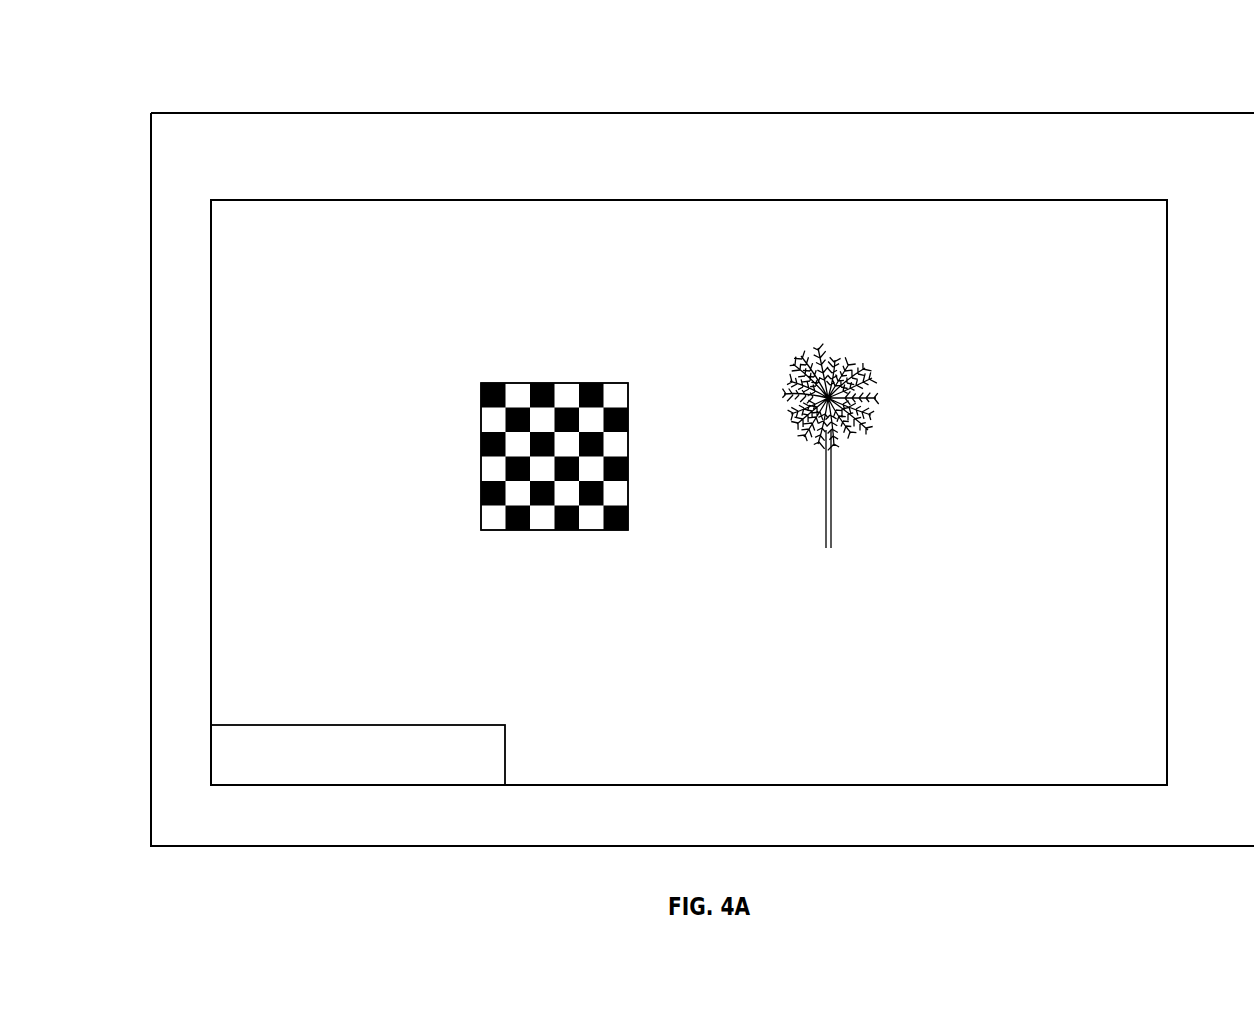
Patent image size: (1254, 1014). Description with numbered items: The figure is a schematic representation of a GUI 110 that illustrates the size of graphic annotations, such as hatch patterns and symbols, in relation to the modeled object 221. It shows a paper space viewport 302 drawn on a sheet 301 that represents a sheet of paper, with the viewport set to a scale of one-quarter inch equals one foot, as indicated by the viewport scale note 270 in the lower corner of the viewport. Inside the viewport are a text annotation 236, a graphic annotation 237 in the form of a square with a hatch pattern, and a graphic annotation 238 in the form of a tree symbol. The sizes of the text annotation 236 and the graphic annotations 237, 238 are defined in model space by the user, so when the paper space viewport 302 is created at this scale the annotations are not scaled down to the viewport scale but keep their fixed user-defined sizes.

The GUI 110 is at (198, 90).
The sheet 301 is at (1087, 113).
The paper space viewport 302 is at (1148, 200).
The viewport scale annotation 270 is at (423, 725).
The text annotation 236 is at (530, 297).
The graphic annotation 237 is at (469, 422).
The modeled object 221 is at (618, 532).
The graphic annotation 238 is at (800, 335).